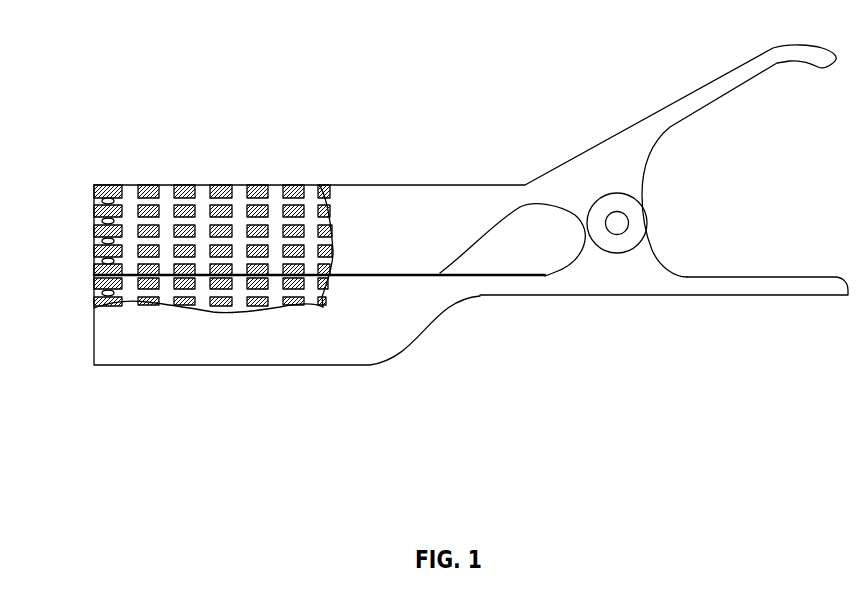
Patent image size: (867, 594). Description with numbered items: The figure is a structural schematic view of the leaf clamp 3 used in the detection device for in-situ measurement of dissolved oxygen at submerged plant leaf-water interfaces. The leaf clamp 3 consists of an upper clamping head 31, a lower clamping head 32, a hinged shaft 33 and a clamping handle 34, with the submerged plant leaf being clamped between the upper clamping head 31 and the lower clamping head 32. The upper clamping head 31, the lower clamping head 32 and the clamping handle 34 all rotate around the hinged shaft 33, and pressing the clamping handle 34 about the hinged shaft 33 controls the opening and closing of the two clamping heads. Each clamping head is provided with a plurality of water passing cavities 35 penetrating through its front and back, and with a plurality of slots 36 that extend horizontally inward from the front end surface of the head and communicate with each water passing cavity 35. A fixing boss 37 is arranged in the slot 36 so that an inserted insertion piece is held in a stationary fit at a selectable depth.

The leaf clamp 3 is at (434, 245).
The upper clamping head 31 is at (383, 213).
The lower clamping head 32 is at (320, 333).
The hinged shaft 33 is at (624, 233).
The clamping handle 34 is at (752, 287).
The water passing cavities 35 is at (163, 213).
The slots 36 is at (148, 245).
The fixing boss 37 is at (100, 242).